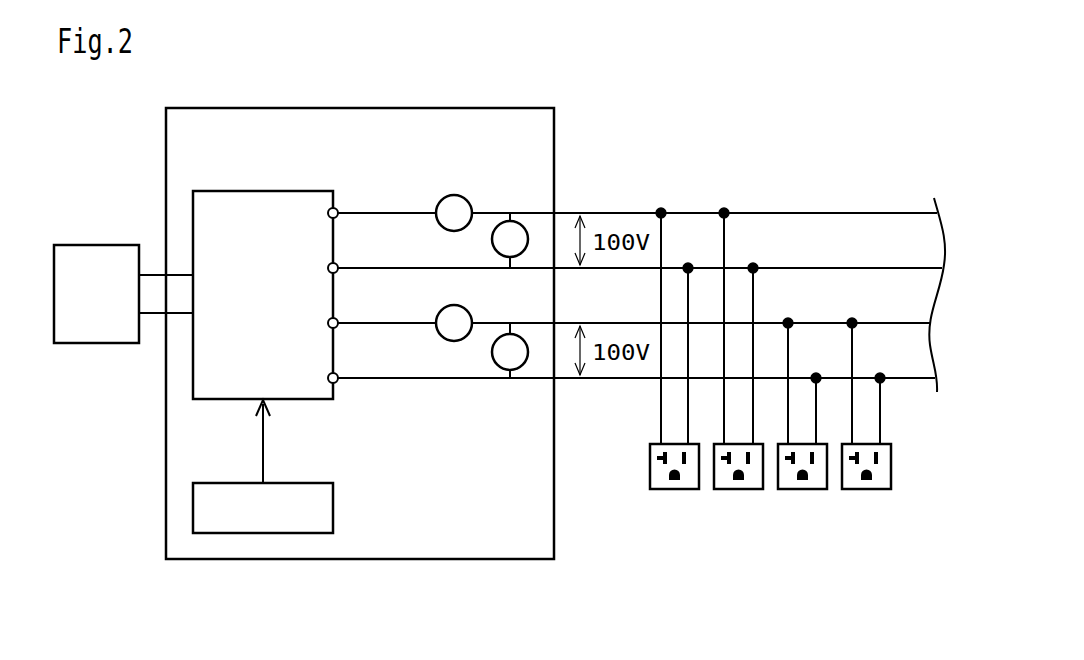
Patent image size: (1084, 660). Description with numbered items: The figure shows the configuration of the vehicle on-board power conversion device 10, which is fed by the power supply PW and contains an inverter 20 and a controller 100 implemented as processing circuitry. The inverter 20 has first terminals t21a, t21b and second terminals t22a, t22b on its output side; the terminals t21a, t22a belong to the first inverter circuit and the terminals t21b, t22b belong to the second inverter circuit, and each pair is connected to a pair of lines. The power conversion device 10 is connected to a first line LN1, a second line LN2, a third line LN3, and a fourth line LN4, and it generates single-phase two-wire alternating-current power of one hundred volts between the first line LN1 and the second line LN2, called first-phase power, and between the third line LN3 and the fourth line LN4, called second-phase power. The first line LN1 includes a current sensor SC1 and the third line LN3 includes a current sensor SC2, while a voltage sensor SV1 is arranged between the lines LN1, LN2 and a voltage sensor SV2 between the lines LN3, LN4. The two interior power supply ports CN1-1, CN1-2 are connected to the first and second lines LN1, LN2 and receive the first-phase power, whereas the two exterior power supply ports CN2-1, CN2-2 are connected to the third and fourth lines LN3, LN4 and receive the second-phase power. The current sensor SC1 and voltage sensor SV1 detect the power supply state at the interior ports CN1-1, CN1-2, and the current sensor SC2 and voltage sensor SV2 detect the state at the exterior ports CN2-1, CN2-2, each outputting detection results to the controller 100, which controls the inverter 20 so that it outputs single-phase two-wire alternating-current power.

The vehicle on-board power conversion device 10 is at (350, 108).
The inverter 20 is at (268, 191).
The controller 100 is at (280, 483).
The power supply PW is at (74, 245).
The first terminal t21a is at (340, 213).
The second terminal t22a is at (340, 268).
The first terminal t21b is at (340, 323).
The second terminal t22b is at (340, 378).
The current sensor SC1 is at (455, 195).
The voltage sensor SV1 is at (528, 238).
The current sensor SC2 is at (455, 341).
The voltage sensor SV2 is at (528, 352).
The first line LN1 is at (835, 213).
The second line LN2 is at (835, 268).
The third line LN3 is at (835, 323).
The fourth line LN4 is at (905, 380).
The interior power supply port CN1-1 is at (672, 490).
The interior power supply port CN1-2 is at (737, 490).
The exterior power supply port CN2-1 is at (800, 490).
The exterior power supply port CN2-2 is at (863, 490).